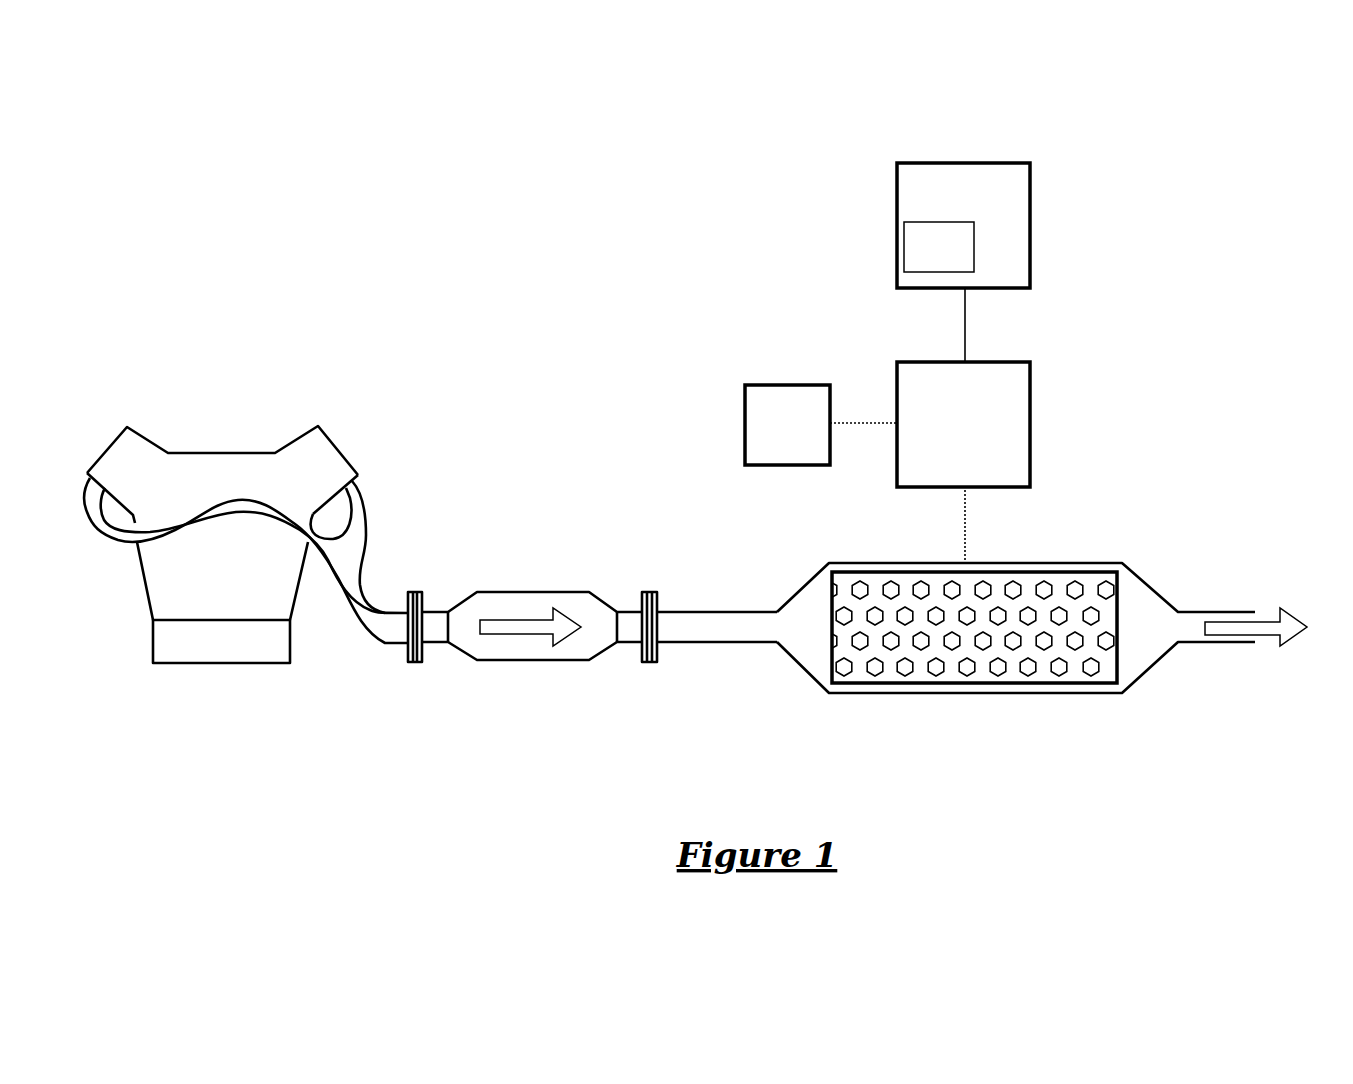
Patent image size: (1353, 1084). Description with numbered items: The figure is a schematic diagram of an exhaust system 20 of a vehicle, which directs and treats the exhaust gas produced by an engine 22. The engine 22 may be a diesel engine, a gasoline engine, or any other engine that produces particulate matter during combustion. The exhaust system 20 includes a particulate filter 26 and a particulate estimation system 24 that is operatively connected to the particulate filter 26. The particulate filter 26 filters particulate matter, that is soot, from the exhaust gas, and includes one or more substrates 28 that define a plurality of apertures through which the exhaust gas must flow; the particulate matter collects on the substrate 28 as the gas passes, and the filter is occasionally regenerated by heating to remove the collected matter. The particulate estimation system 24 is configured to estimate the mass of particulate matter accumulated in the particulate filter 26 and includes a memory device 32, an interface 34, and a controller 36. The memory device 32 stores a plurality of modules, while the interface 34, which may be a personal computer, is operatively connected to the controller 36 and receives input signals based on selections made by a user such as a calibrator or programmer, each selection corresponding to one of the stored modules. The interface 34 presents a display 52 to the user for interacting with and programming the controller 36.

The exhaust system 20 is at (783, 241).
The engine 22 is at (207, 452).
The particulate estimation system 24 is at (1128, 193).
The particulate filter 26 is at (1066, 560).
The substrate 28 is at (982, 675).
The memory device 32 is at (787, 425).
The interface 34 is at (963, 225).
The controller 36 is at (963, 424).
The display 52 is at (939, 247).